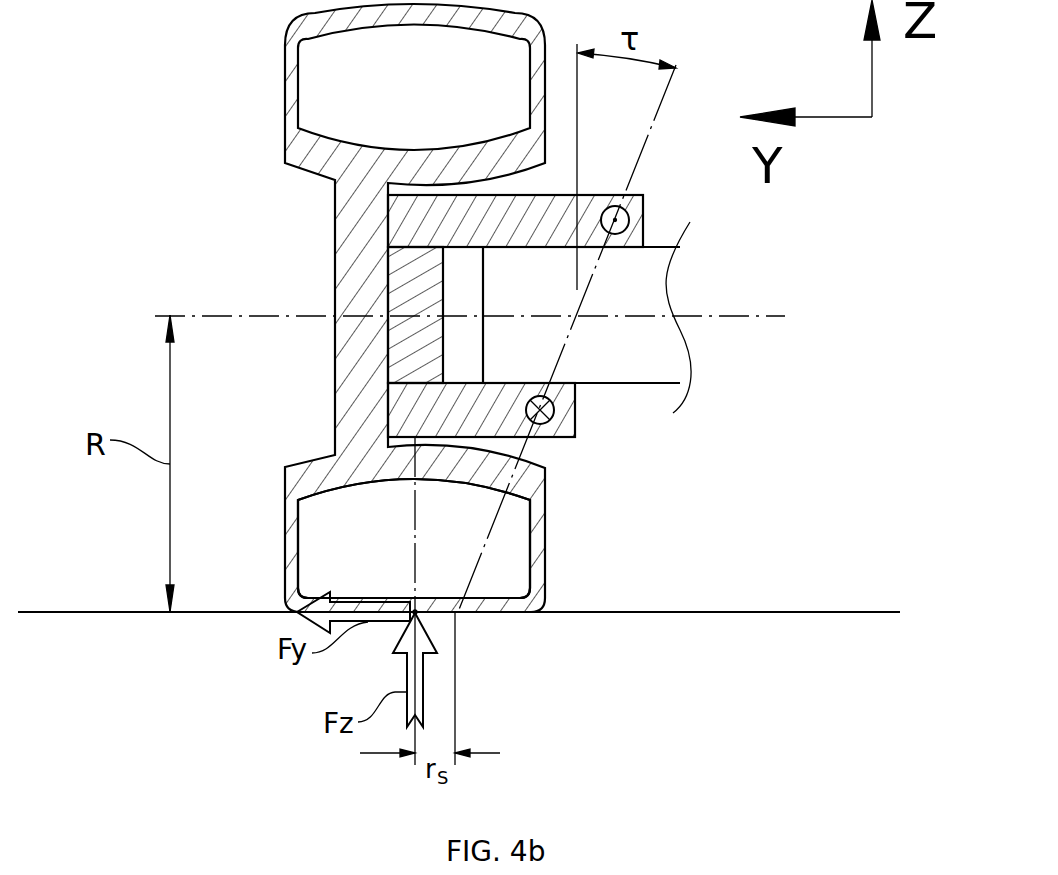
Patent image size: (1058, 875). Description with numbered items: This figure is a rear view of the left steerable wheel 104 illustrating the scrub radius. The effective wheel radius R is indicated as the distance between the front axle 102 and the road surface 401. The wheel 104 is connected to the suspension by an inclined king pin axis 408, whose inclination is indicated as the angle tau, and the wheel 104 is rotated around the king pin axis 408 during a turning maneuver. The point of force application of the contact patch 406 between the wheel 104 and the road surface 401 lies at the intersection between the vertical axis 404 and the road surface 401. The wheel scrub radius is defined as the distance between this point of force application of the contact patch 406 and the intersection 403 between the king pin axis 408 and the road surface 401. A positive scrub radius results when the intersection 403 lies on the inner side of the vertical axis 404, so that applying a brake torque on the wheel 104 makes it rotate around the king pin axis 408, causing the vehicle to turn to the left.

The front axle 102 is at (643, 350).
The left steerable wheel 104 is at (545, 568).
The road surface 401 is at (97, 614).
The intersection 403 is at (457, 613).
The vertical axis 404 is at (413, 558).
The contact patch 406 is at (410, 616).
The king pin axis 408 is at (495, 515).